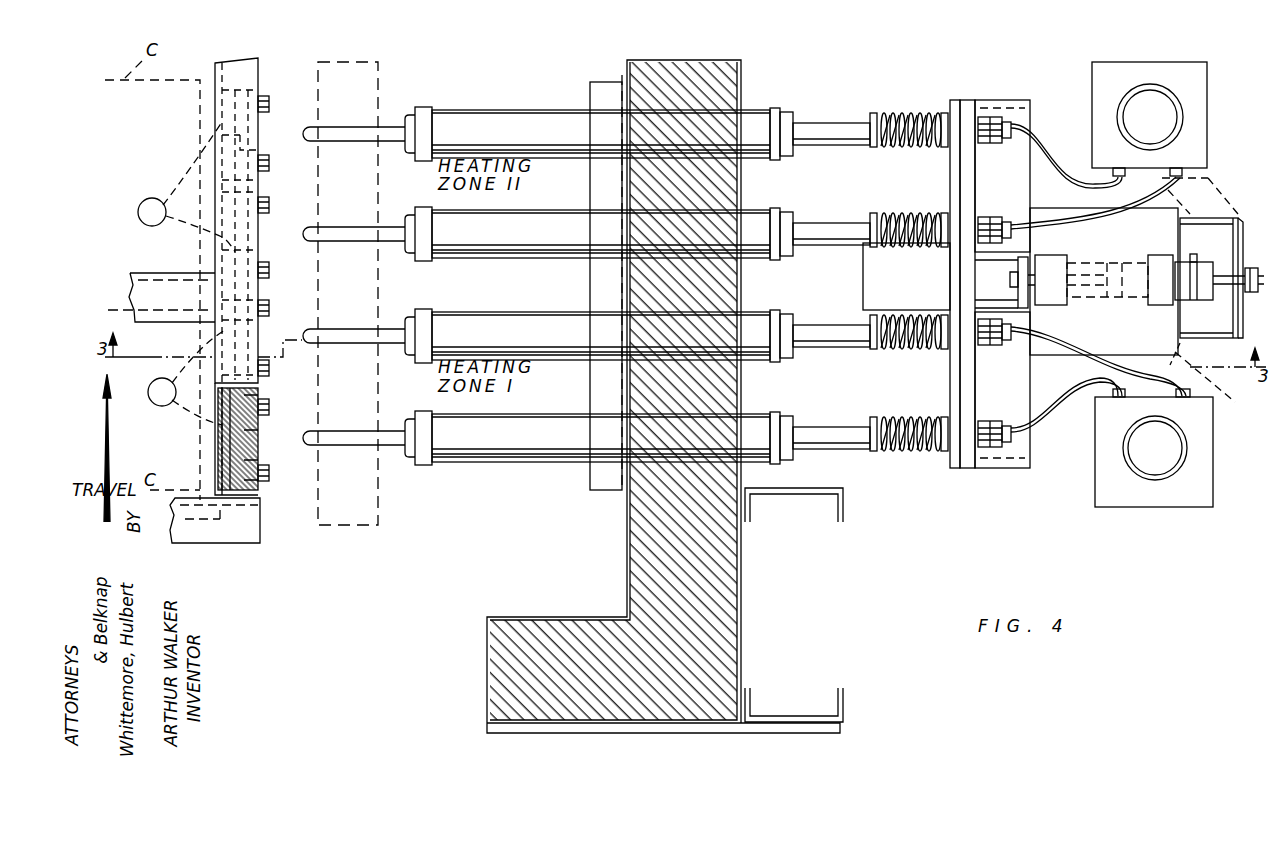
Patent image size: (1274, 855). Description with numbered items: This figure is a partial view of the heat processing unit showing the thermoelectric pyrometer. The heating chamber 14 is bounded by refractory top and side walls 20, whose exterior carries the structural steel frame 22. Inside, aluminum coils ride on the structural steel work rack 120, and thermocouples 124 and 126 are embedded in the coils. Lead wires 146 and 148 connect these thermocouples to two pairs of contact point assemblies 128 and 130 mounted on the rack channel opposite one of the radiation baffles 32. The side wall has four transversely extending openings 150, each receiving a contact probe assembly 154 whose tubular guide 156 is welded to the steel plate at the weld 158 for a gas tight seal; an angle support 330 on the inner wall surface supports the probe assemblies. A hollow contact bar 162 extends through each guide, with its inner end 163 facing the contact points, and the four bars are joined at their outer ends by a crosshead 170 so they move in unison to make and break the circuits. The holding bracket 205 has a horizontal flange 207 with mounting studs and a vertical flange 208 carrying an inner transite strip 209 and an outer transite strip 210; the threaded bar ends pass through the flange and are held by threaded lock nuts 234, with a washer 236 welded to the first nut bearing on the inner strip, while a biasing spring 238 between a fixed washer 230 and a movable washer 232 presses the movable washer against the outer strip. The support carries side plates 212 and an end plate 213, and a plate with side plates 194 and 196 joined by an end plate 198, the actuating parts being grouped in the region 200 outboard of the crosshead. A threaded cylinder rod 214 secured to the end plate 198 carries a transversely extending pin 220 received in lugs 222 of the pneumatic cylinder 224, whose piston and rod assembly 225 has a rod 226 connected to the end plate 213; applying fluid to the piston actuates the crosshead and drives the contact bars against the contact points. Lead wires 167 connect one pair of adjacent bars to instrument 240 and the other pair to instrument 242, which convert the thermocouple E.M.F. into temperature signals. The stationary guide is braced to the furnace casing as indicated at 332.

The heating chamber 14 is at (492, 538).
The top and side walls 20 is at (650, 537).
The structural steel frame 22 is at (741, 540).
The radiation baffle 32 is at (378, 72).
The work rack 120 is at (205, 548).
The thermocouple 124 is at (160, 199).
The thermocouple 126 is at (150, 390).
The contact point assembly 128 is at (290, 213).
The contact point assembly 130 is at (290, 413).
The lead wire 146 is at (190, 236).
The lead wire 148 is at (175, 165).
The transversely extending opening 150 is at (615, 520).
The contact probe assembly 154 is at (470, 464).
The tubular guide 156 is at (450, 468).
The weld 158 is at (800, 414).
The contact bar 162 is at (405, 142).
The rod tips 163 is at (312, 134).
The lead wire 167 is at (1036, 166).
The crosshead 170 is at (965, 280).
The side plate 194 is at (1194, 354).
The side plate 196 is at (1212, 220).
The end plate 198 is at (1232, 338).
The housing 200 is at (863, 275).
The holding bracket 205 is at (1015, 470).
The horizontal flange 207 is at (1030, 452).
The vertical flange 208 is at (958, 100).
The inner transite strip 209 is at (968, 100).
The outer transite strip 210 is at (952, 104).
The side plate 212 is at (995, 268).
The end plate 213 is at (1028, 263).
The threaded cylinder rod 214 is at (1247, 290).
The transversely extending pin 220 is at (1194, 254).
The lug 222 is at (1204, 267).
The cylinder 224 is at (1130, 300).
The piston and rod assembly 225 is at (1138, 266).
The piston rod 226 is at (1095, 265).
The fixed washer 230 is at (870, 144).
The movable washer 232 is at (944, 352).
The threaded lock nut 234 is at (983, 146).
The washer 236 is at (985, 110).
The biasing spring 238 is at (872, 114).
The instrument 240 is at (1195, 97).
The instrument 242 is at (1163, 490).
The angle support 330 is at (590, 280).
The brace 332 is at (1207, 181).